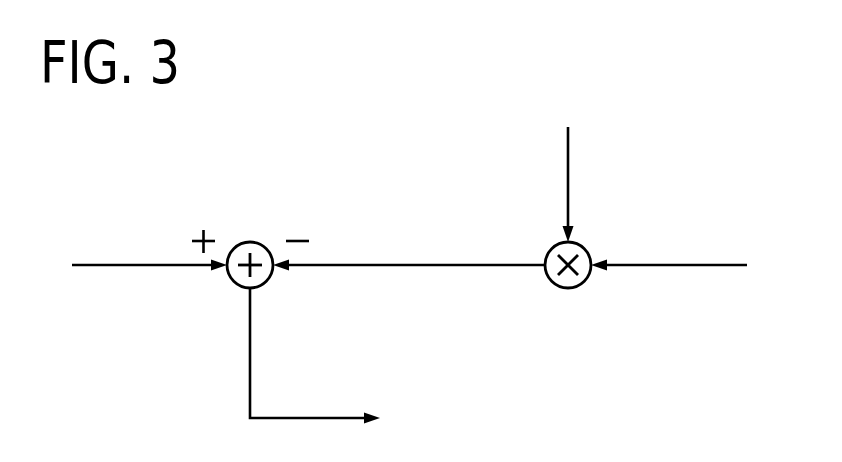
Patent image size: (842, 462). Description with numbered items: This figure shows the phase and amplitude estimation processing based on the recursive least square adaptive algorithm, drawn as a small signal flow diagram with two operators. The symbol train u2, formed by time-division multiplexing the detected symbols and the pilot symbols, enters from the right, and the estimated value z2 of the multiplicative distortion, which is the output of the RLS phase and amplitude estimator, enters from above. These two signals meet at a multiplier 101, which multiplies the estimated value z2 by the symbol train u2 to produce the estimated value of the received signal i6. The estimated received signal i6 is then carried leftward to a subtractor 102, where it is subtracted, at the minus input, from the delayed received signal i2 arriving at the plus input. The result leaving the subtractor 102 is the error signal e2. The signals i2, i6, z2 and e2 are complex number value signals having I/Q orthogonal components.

The multiplier 101 is at (567, 290).
The subtractor 102 is at (248, 241).
The delayed received signal i2 is at (149, 246).
The estimated value of received signal i6 is at (409, 246).
The symbol train u2 is at (669, 246).
The estimated value of multiplicative distortion z2 is at (569, 167).
The error signal e2 is at (340, 364).